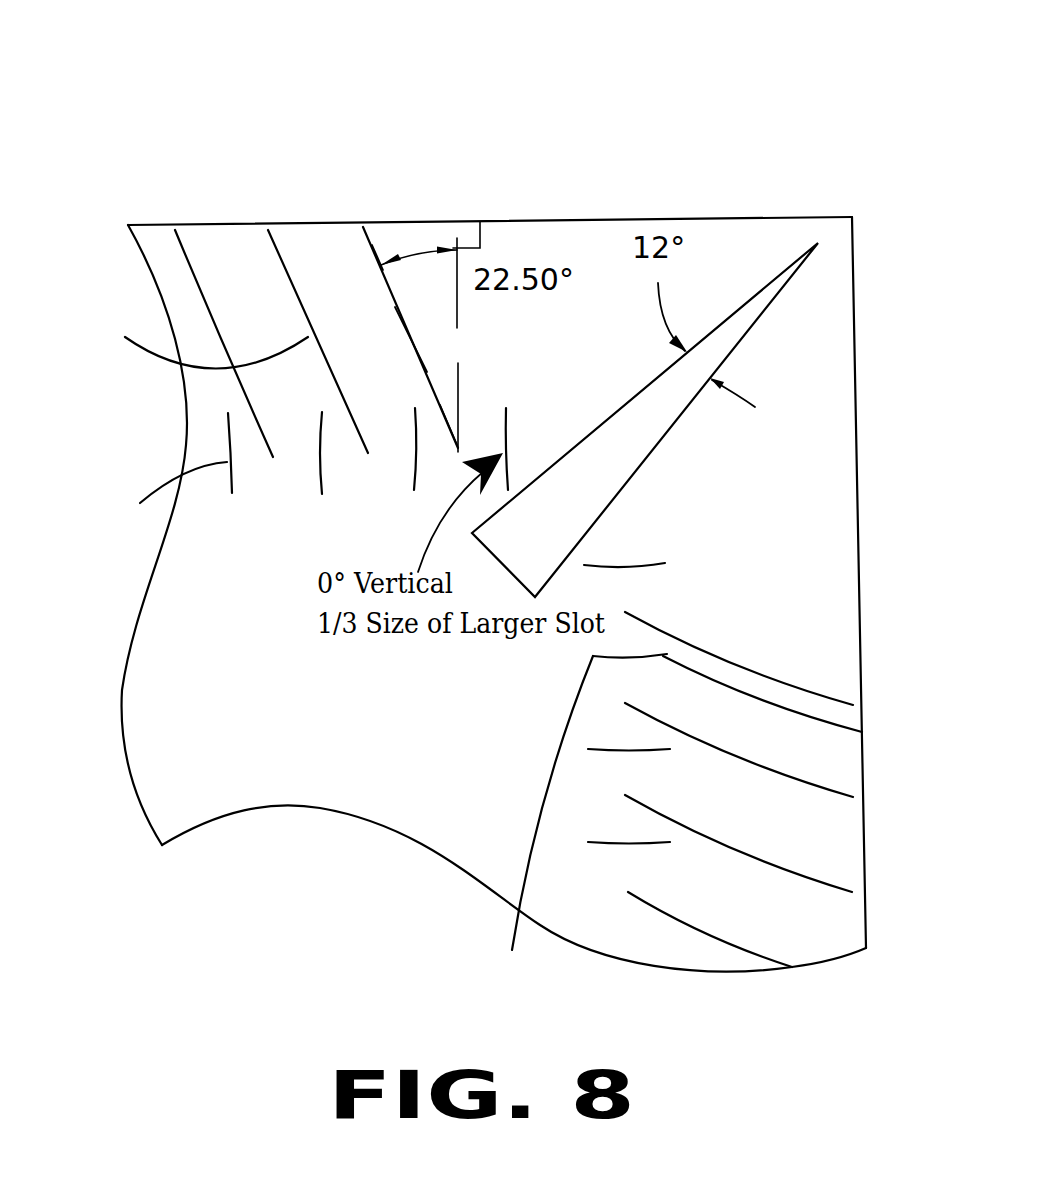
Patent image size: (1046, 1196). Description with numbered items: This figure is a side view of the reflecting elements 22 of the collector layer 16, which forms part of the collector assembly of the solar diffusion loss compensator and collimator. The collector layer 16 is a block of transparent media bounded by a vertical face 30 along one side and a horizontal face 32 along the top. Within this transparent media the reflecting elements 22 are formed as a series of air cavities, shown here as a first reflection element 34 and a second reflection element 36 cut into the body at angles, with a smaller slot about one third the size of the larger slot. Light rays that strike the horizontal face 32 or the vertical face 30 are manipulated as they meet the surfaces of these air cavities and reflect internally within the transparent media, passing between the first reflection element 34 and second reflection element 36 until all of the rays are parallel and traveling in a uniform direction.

The collector layer 16 is at (459, 140).
The vertical face 30 is at (855, 457).
The horizontal face 32 is at (597, 221).
The first reflection element 34 is at (208, 326).
The reflecting elements 22 is at (233, 380).
The second reflection element 36 is at (322, 478).